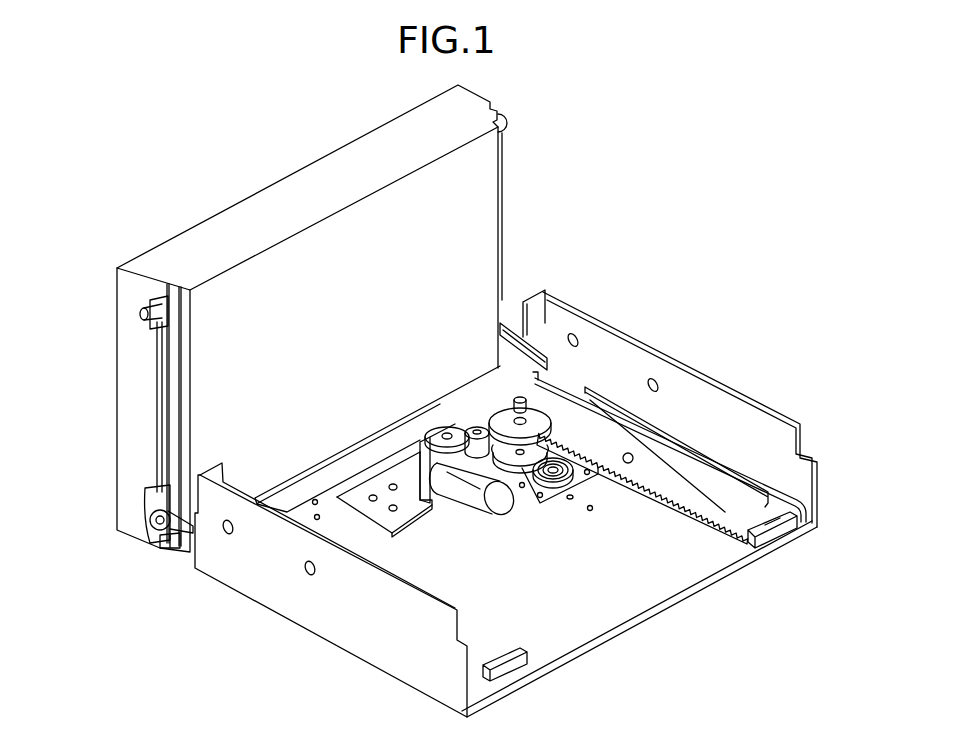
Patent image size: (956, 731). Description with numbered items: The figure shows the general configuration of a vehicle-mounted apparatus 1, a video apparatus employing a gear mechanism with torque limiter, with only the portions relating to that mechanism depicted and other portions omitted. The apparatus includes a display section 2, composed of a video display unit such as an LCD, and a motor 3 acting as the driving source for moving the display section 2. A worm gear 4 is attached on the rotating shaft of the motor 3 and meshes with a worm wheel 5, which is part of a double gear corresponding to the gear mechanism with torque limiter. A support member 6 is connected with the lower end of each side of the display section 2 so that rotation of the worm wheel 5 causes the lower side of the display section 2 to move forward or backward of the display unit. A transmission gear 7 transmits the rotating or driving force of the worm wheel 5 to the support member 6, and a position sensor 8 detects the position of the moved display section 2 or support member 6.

The vehicle-mounted apparatus 1 is at (290, 157).
The display section 2 is at (477, 198).
The motor 3 is at (463, 493).
The worm gear 4 is at (412, 450).
The worm wheel 5 is at (438, 430).
The support member 6 is at (523, 353).
The transmission gear 7 is at (537, 420).
The position sensor 8 is at (588, 483).